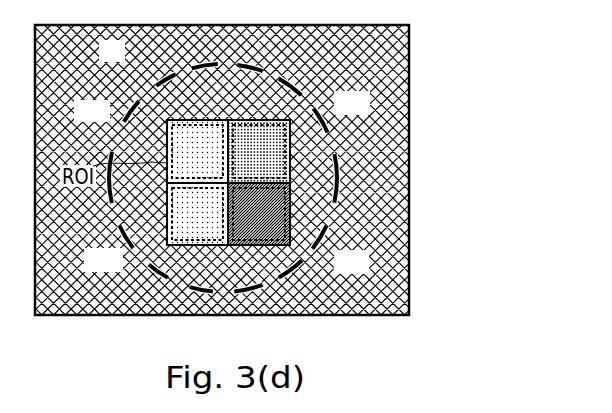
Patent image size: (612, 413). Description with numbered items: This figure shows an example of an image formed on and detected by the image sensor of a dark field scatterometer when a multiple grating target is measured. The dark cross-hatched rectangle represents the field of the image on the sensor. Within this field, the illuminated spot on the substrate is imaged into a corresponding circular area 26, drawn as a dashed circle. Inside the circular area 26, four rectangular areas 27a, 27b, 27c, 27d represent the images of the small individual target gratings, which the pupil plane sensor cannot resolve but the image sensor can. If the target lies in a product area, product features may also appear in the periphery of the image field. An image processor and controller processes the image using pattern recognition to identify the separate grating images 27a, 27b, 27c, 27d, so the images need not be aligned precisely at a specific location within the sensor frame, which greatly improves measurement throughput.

The circular area 26 is at (148, 87).
The rectangular area 27a is at (167, 124).
The rectangular area 27b is at (167, 228).
The rectangular area 27c is at (290, 222).
The rectangular area 27d is at (290, 152).